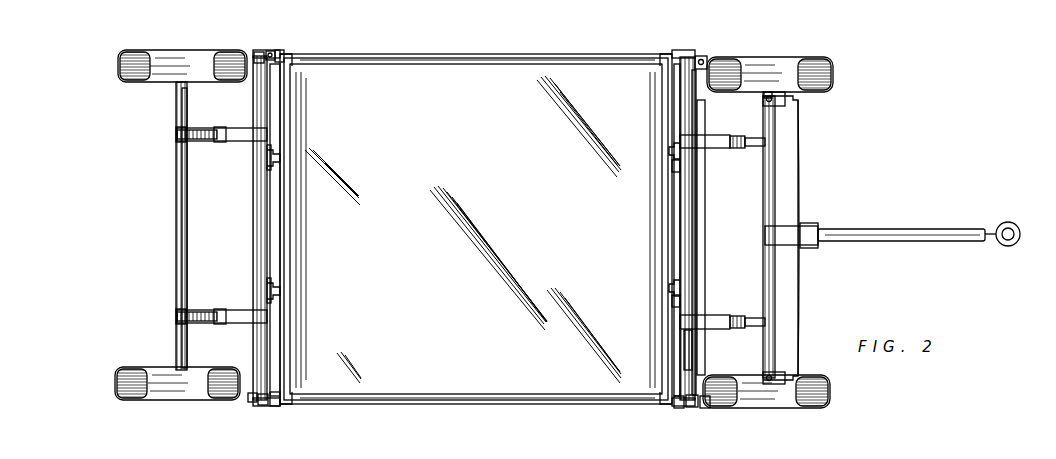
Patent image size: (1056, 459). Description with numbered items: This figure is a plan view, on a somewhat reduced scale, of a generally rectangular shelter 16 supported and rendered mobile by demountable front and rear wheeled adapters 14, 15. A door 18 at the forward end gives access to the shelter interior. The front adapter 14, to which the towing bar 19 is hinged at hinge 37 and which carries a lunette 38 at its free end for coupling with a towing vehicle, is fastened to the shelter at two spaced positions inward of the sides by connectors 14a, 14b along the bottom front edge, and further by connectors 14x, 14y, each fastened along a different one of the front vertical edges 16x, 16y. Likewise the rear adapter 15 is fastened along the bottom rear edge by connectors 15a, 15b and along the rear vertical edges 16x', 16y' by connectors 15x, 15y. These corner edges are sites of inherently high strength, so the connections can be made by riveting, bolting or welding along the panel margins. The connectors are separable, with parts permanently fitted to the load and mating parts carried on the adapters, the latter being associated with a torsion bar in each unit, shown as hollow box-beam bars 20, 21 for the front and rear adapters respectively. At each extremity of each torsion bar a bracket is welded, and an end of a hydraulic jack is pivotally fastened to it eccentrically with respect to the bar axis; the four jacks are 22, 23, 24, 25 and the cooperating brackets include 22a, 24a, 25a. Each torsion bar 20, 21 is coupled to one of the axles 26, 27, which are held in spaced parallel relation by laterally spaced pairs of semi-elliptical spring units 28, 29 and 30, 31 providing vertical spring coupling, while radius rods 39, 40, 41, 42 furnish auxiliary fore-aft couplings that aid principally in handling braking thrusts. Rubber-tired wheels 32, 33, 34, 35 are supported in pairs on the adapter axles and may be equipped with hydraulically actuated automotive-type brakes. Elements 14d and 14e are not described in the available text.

The front wheeled adapter 14 is at (853, 156).
The connector 14a is at (686, 294).
The connector 14b is at (690, 185).
The upper bracket of right frame 14d is at (678, 150).
The upper bracket clip 14e is at (676, 170).
The connector 14x is at (672, 412).
The connector 14y is at (664, 50).
The rear wheeled adapter 15 is at (135, 183).
The connector 15a is at (268, 292).
The connector 15b is at (270, 165).
The connector 15x is at (282, 410).
The connector 15y is at (290, 50).
The shelter 16 is at (470, 166).
The front vertical edge 16x is at (642, 371).
The rear vertical edge 16x' is at (312, 369).
The front vertical edge 16y is at (644, 90).
The rear vertical edge 16y' is at (309, 82).
The door 18 is at (724, 360).
The towing bar 19 is at (877, 232).
The torsion bar 20 is at (700, 244).
The torsion bar 21 is at (260, 238).
The hydraulic jack 22 is at (688, 410).
The bracket 22a is at (703, 408).
The hydraulic jack 23 is at (706, 70).
The hydraulic jack 24 is at (263, 406).
The bracket 24a is at (255, 405).
The hydraulic jack 25 is at (262, 64).
The bracket 25a is at (256, 64).
The axle 26 is at (775, 207).
The axle 27 is at (181, 257).
The semi-elliptical spring unit 28 is at (735, 312).
The semi-elliptical spring unit 29 is at (744, 134).
The semi-elliptical spring unit 30 is at (216, 308).
The semi-elliptical spring unit 31 is at (213, 143).
The rubber-tired wheel 32 is at (830, 390).
The rubber-tired wheel 33 is at (834, 77).
The rubber-tired wheel 34 is at (118, 375).
The rubber-tired wheel 35 is at (122, 83).
The hinge 37 is at (812, 247).
The lunette 38 is at (1003, 243).
The radius rod 39 is at (758, 324).
The radius rod 40 is at (755, 146).
The radius rod 41 is at (200, 322).
The radius rod 42 is at (212, 135).